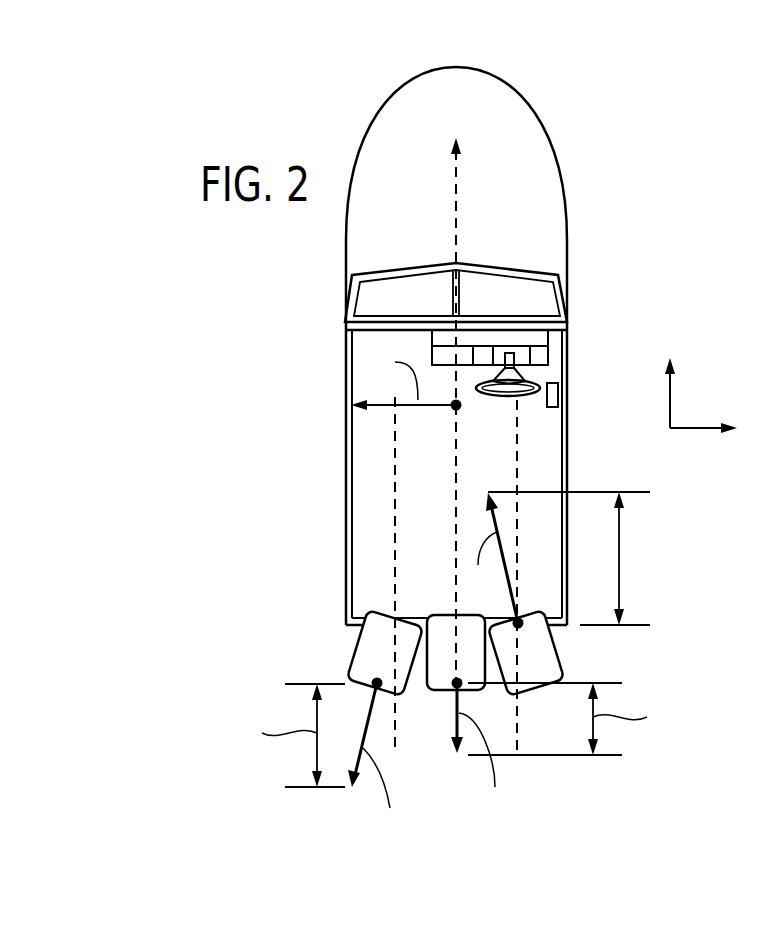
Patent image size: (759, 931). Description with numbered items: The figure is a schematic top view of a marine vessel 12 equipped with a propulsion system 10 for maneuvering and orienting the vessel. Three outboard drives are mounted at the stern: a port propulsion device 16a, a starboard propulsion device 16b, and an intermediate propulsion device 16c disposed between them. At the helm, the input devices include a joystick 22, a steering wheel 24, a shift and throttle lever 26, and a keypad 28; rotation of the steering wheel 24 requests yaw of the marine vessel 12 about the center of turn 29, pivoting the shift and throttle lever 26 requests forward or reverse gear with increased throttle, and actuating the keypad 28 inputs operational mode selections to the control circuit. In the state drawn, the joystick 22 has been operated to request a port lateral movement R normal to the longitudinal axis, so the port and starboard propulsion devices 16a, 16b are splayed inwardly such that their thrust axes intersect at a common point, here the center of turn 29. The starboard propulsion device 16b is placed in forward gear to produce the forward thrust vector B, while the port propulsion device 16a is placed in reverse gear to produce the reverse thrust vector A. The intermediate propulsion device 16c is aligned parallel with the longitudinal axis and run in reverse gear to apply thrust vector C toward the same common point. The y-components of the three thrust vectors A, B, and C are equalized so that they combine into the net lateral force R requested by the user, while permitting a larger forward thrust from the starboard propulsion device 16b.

The propulsion system 10 is at (562, 74).
The marine vessel 12 is at (550, 158).
The port propulsion device 16a is at (355, 652).
The starboard propulsion device 16b is at (563, 668).
The intermediate propulsion device 16c is at (440, 690).
The joystick 22 is at (542, 357).
The steering wheel 24 is at (497, 400).
The shift and throttle lever 26 is at (559, 395).
The keypad 28 is at (483, 352).
The center of turn 29 is at (448, 408).